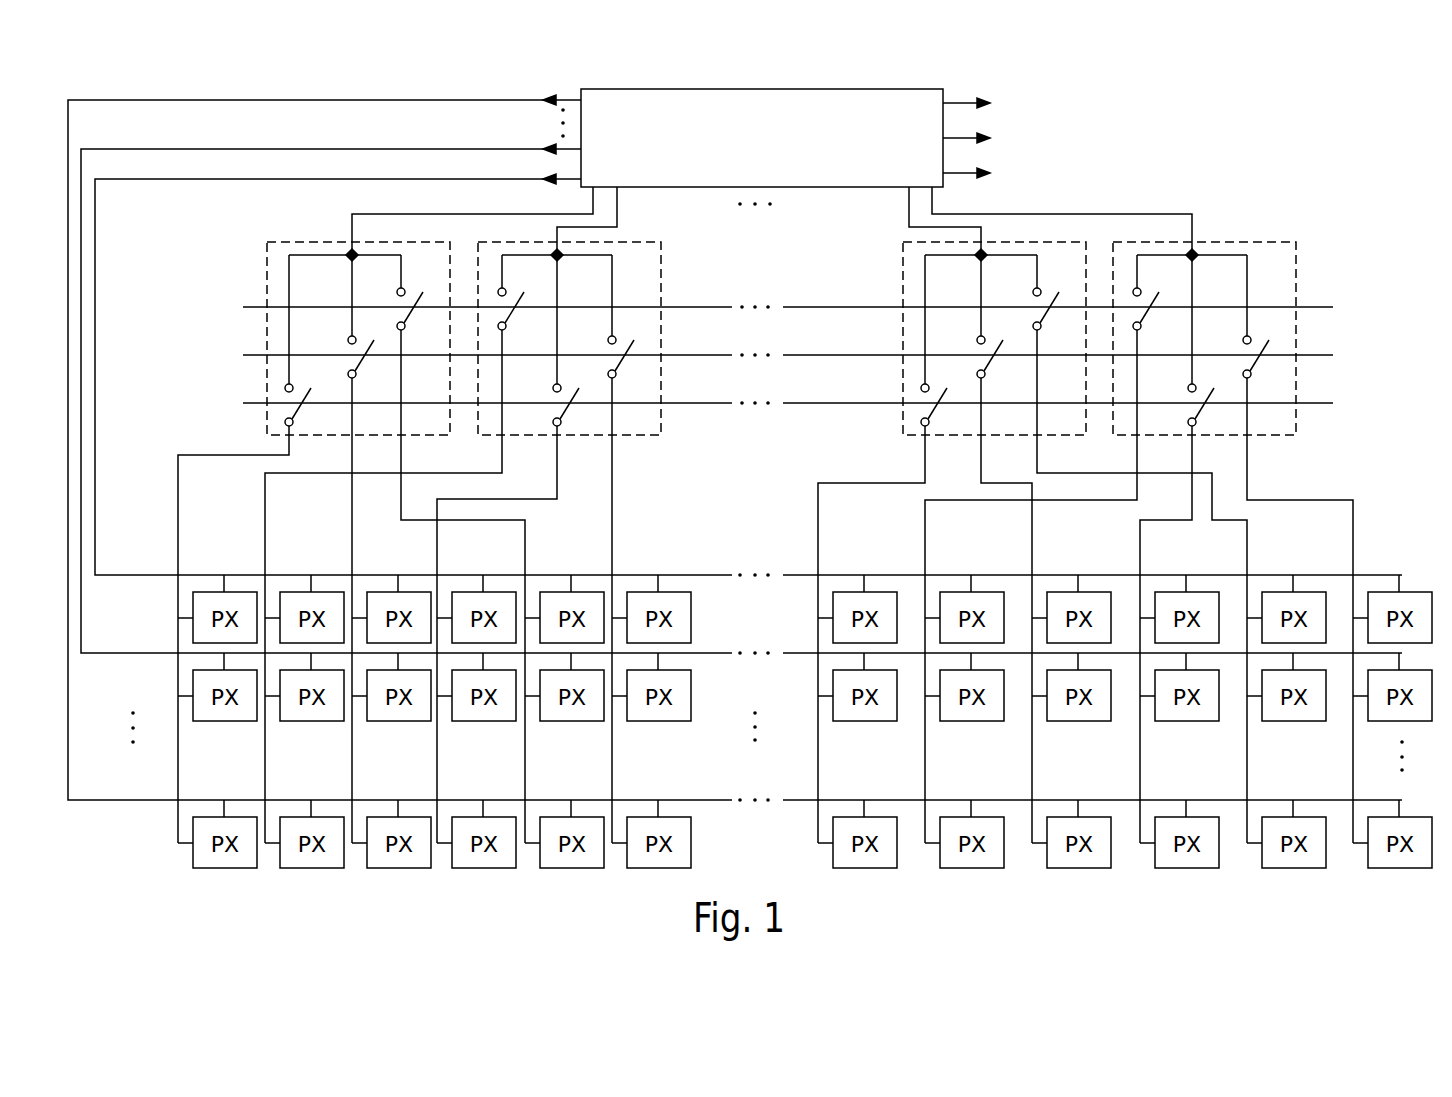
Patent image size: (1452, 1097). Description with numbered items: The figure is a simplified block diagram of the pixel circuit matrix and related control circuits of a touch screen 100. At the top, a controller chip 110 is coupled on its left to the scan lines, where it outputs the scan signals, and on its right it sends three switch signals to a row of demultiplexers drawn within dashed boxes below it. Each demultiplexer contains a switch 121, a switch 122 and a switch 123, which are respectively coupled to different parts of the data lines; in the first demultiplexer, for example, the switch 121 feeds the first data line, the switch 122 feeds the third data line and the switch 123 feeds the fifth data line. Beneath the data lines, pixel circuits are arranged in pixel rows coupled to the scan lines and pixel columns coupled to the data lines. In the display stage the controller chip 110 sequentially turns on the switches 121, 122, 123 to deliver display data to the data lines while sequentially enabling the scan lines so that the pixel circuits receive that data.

The touch screen 100 is at (1402, 131).
The controller chip 110 is at (787, 89).
The switch 121 is at (709, 549).
The switch 122 is at (850, 549).
The switch 123 is at (756, 549).